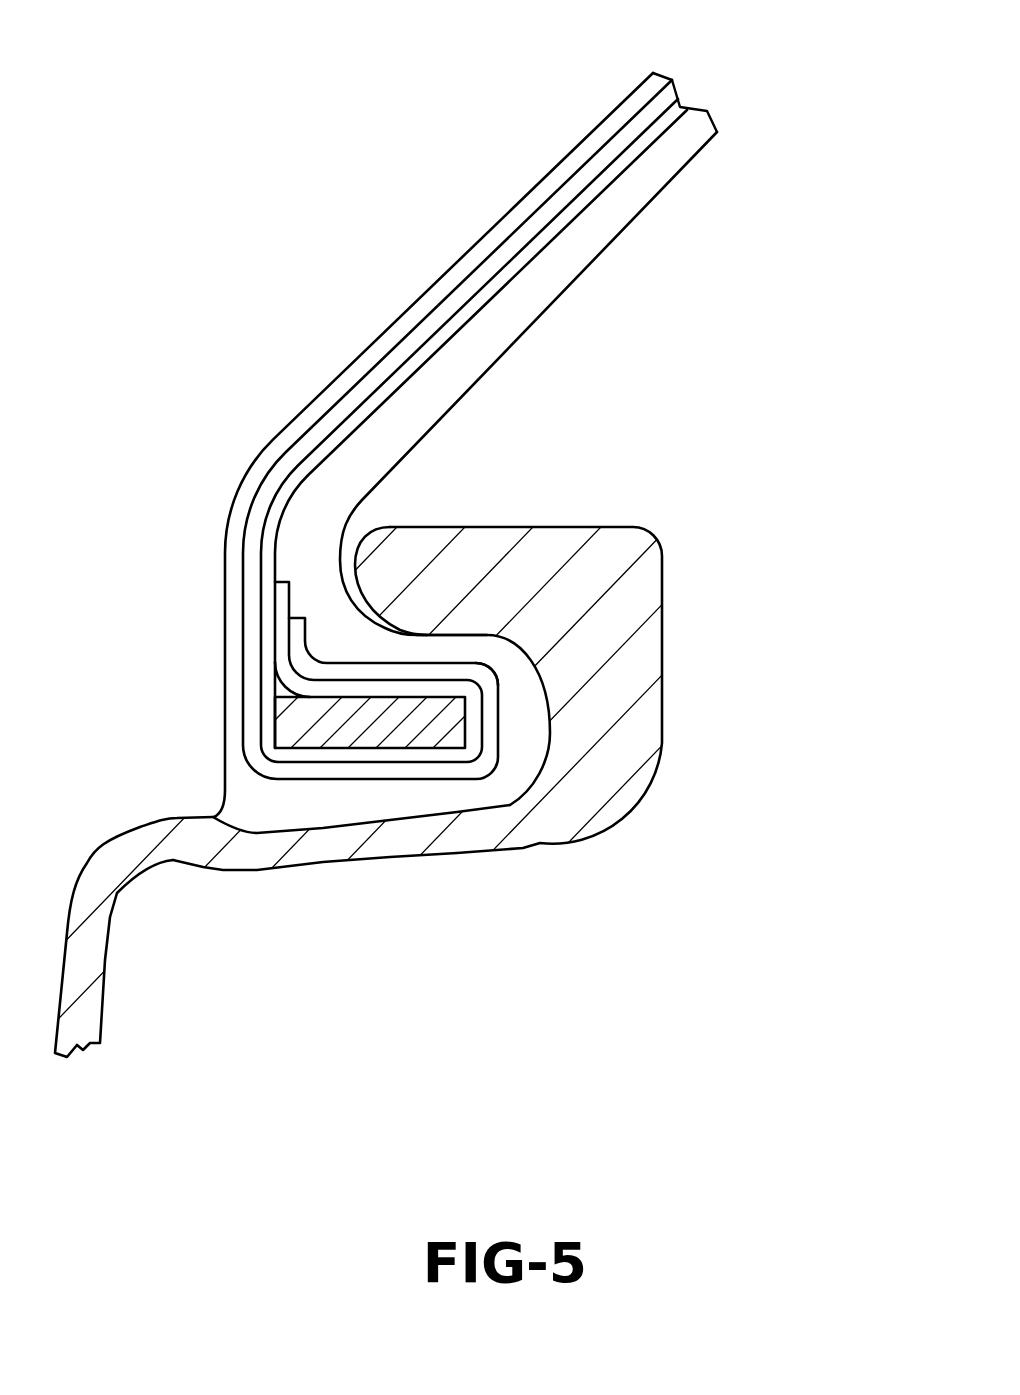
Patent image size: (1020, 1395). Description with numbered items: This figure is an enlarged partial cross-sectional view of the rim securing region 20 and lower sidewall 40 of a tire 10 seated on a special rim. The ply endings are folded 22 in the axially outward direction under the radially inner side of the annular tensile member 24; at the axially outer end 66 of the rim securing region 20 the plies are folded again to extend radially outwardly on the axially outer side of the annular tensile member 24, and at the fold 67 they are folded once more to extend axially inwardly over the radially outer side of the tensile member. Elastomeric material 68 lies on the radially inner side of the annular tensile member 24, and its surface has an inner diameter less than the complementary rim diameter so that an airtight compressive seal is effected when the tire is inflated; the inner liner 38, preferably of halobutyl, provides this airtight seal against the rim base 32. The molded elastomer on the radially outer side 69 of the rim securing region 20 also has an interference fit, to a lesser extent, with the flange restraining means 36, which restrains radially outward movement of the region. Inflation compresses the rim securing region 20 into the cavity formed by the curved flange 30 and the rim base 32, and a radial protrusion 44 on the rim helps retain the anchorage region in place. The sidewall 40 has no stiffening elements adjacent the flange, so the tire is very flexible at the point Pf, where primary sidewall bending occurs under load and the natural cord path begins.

The tire 10 is at (790, 135).
The rim securing region 20 is at (490, 694).
The folded ply endings 22 is at (290, 770).
The annular tensile member 24 is at (375, 730).
The curved flange 30 is at (703, 807).
The rim base 32 is at (605, 808).
The flange restraining means 36 is at (410, 558).
The inner liner 38 is at (503, 232).
The sidewall 40 is at (645, 185).
The radial protrusion 44 is at (163, 815).
The axially outer end of rim securing region 66 is at (488, 768).
The ply fold on axially outer side of tensile member 67 is at (462, 731).
The elastomeric material 68 is at (470, 800).
The radially outer side of rim securing region 69 is at (463, 635).
The point of high sidewall flexibility Pf is at (383, 397).